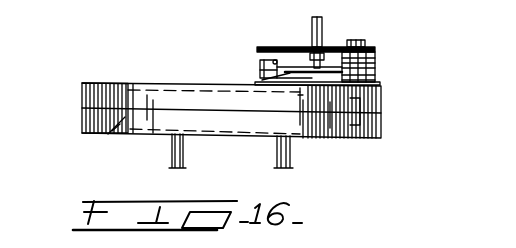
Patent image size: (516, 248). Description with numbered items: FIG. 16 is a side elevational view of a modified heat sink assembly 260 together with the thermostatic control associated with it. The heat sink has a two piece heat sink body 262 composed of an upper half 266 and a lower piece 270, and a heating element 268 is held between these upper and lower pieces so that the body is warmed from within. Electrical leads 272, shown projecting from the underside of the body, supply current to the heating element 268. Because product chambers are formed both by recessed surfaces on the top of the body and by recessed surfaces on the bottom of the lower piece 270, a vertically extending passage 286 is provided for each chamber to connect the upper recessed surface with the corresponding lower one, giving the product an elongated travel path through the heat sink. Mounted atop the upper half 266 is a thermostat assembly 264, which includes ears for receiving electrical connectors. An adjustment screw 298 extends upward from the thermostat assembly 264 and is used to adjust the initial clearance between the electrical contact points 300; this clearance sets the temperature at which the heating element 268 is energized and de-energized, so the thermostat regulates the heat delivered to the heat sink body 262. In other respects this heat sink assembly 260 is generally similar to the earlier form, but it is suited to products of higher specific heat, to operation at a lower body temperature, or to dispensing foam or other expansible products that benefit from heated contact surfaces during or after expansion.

The heat sink assembly 260 is at (388, 114).
The heat sink body 262 is at (79, 133).
The thermostat assembly 264 is at (381, 68).
The upper half 266 is at (93, 91).
The heating element 268 is at (150, 138).
The lower piece 270 is at (323, 122).
The electrical leads 272 is at (177, 163).
The vertically extending passage 286 is at (112, 131).
The adjustment screw 298 is at (322, 40).
The electrical contact points 300 is at (262, 70).